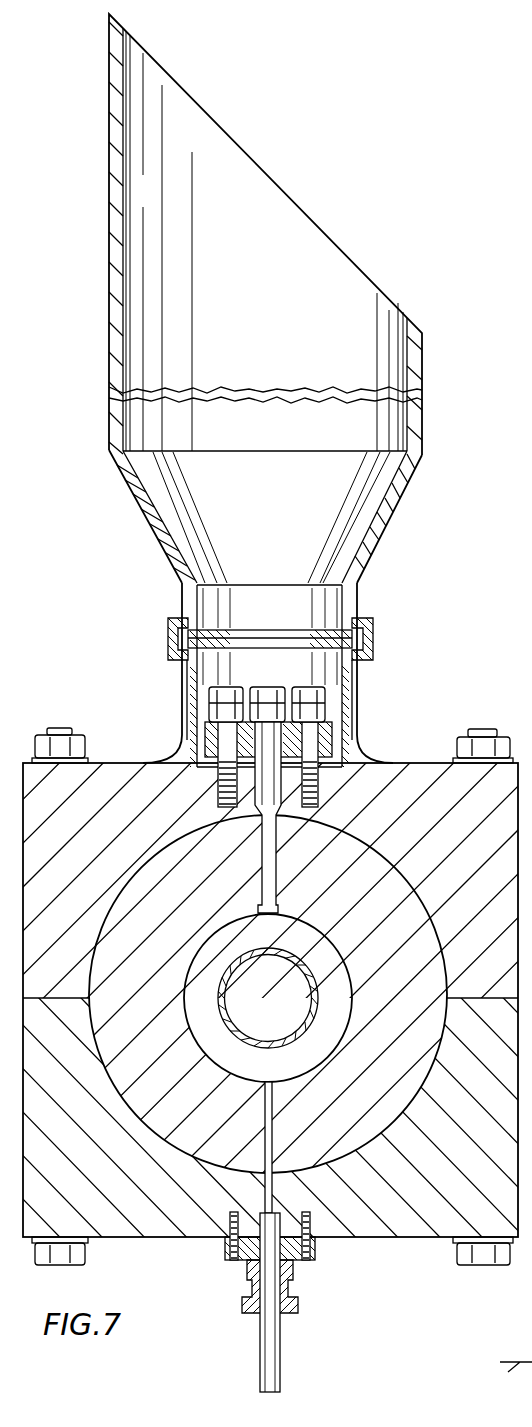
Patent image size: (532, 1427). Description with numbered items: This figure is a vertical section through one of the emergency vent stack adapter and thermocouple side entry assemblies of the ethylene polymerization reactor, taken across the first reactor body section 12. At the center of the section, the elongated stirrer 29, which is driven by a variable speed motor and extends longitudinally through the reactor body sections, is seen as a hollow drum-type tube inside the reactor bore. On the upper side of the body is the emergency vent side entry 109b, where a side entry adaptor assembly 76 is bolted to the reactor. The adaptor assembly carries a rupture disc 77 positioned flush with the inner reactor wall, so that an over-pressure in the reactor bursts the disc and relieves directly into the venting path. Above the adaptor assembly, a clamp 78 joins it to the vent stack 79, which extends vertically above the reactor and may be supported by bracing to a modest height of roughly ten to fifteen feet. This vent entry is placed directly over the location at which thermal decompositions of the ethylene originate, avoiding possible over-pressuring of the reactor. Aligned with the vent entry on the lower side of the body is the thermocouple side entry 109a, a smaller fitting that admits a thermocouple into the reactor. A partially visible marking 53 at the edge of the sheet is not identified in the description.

The vent stack 79 is at (277, 310).
The clamp 78 is at (370, 650).
The side entry adaptor assembly 76 is at (182, 714).
The first reactor body section 12 is at (338, 915).
The side entry 109b is at (370, 723).
The rupture disc 77 is at (270, 913).
The stirrer 29 is at (297, 973).
The thermocouple side entry 109a is at (300, 1277).
The partial reference 53 is at (516, 1351).